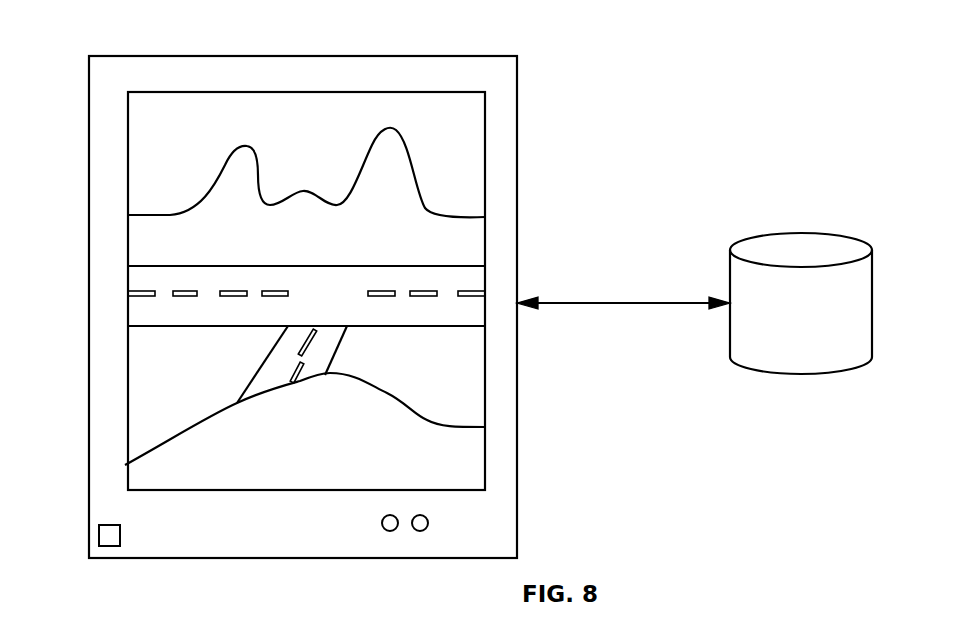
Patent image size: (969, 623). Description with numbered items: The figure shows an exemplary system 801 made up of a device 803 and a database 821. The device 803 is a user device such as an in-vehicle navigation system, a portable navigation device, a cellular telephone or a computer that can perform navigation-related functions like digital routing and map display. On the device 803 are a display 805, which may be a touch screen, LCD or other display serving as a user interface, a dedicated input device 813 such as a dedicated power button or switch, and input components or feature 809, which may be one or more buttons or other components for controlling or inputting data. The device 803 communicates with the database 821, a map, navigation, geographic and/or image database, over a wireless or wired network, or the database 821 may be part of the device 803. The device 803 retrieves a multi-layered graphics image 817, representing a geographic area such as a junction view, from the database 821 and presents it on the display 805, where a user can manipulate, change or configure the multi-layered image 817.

The system 801 is at (655, 442).
The device 803 is at (433, 56).
The display 805 is at (128, 110).
The input components or feature 809 is at (421, 515).
The dedicated input device 813 is at (120, 538).
The multi-layered graphics image 817 is at (443, 377).
The database 821 is at (784, 316).